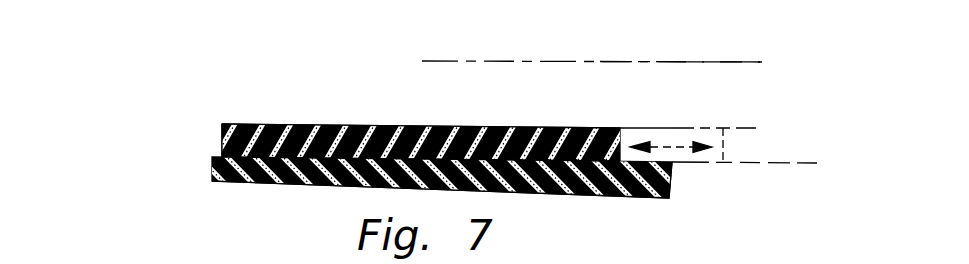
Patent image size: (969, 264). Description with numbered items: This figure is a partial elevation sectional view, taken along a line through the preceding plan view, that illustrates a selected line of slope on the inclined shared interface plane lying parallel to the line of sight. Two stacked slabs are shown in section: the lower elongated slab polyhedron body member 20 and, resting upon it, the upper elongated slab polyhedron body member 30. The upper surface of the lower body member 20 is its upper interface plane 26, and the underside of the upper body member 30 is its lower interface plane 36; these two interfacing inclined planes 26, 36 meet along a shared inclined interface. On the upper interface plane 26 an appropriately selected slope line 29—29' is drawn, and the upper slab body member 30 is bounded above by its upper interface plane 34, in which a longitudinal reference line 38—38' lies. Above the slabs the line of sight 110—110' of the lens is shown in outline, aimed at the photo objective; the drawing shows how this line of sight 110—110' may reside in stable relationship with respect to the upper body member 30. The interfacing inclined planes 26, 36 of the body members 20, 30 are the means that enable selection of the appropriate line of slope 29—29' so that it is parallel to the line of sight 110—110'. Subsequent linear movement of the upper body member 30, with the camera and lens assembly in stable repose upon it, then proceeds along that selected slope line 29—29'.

The elongated slab polyhedron body member 20 is at (681, 197).
The upper interface plane of lower body member 26 is at (459, 177).
The selected line of slope upon the upper interface plane of the lower body member 29 is at (326, 160).
The selected line of slope upon the upper interface plane of the lower body member 29' is at (769, 166).
The elongated slab polyhedron upper body member 30 is at (218, 141).
The upper interface plane of the upper slab body member 34 is at (645, 128).
The lower interface plane of the upper slab body member 36 is at (459, 142).
The longitudinal reference line in the upper surface of the upper slab body member 38 is at (366, 128).
The longitudinal reference line in the upper surface of the upper slab body member 38' is at (736, 142).
The line of sight of lens 110 is at (568, 61).
The line of sight of lens 110' is at (707, 63).